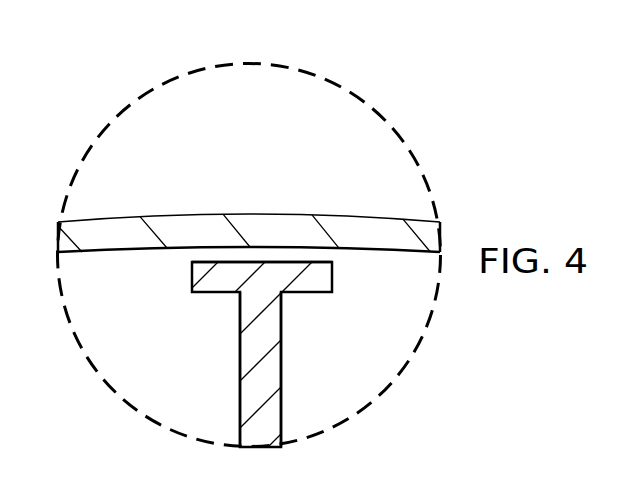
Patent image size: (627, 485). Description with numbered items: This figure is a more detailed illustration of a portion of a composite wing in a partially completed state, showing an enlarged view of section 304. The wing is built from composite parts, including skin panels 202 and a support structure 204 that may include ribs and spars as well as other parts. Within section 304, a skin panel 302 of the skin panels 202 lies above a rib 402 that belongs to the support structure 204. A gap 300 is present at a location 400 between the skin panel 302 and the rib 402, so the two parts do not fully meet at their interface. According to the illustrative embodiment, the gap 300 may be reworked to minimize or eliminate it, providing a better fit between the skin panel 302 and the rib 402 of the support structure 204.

The section 304 is at (328, 82).
The skin panels 202 is at (183, 216).
The skin panel 302 is at (272, 215).
The gap 300 is at (178, 261).
The location 400 is at (339, 261).
The support structure 204 is at (280, 368).
The rib 402 is at (240, 358).